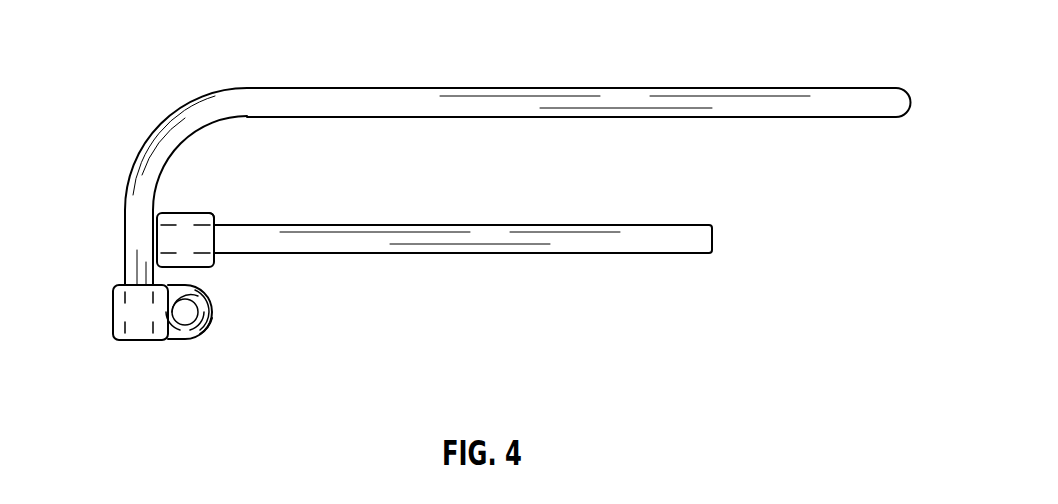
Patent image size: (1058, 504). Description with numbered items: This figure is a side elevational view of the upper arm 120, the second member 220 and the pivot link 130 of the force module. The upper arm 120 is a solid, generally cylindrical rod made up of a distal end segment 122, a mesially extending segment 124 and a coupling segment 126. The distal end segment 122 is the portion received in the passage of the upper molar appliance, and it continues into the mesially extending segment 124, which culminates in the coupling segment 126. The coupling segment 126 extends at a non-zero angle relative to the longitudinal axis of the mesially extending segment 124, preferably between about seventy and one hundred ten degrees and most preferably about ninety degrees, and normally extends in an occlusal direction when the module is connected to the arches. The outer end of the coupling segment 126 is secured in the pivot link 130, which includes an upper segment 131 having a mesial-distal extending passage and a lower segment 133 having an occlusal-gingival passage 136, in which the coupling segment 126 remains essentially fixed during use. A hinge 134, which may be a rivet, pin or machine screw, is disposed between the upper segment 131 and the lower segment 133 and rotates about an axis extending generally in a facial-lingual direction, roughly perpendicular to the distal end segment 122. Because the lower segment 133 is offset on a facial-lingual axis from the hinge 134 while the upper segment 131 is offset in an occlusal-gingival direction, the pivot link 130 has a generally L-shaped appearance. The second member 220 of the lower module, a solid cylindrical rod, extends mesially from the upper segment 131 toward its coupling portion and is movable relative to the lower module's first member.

The upper arm 120 is at (502, 156).
The distal end segment 122 is at (640, 97).
The mesially extending segment 124 is at (158, 125).
The coupling segment 126 is at (125, 207).
The pivot link 130 is at (128, 344).
The upper segment 131 is at (212, 263).
The lower segment 133 is at (112, 316).
The hinge 134 is at (203, 213).
The occlusal-gingival passage 136 is at (160, 340).
The second member 220 is at (703, 240).